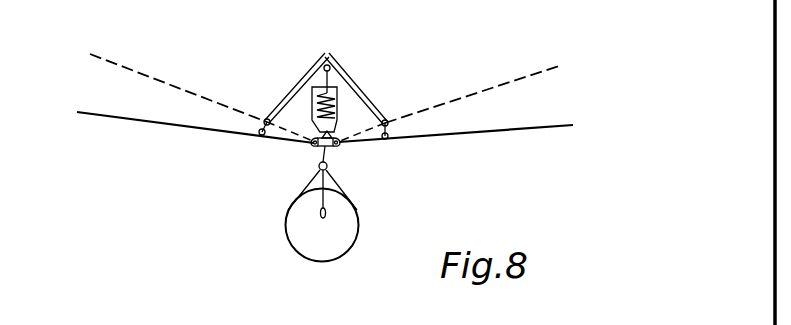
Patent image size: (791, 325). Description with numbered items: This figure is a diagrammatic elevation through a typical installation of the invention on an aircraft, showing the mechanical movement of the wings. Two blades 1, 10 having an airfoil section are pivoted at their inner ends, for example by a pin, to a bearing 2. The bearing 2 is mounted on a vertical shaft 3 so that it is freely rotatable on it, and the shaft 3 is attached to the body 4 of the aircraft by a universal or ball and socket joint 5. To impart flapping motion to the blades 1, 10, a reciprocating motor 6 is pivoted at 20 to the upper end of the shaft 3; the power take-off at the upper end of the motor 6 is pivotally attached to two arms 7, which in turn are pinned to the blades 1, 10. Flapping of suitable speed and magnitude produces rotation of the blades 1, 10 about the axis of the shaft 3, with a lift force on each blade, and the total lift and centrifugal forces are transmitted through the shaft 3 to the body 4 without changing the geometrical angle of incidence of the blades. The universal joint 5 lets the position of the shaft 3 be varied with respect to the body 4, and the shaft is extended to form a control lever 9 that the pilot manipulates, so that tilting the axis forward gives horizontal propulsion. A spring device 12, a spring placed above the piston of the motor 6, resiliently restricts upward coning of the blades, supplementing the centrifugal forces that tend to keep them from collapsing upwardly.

The blade 1 is at (500, 135).
The blade 10 is at (175, 126).
The arm 7 is at (283, 102).
The reciprocating motor 6 is at (339, 105).
The spring device 12 is at (314, 100).
The pivot 20 is at (333, 131).
The bearing 2 is at (315, 146).
The vertical shaft 3 is at (328, 162).
The universal joint 5 is at (312, 183).
The body 4 is at (360, 218).
The control lever 9 is at (322, 218).